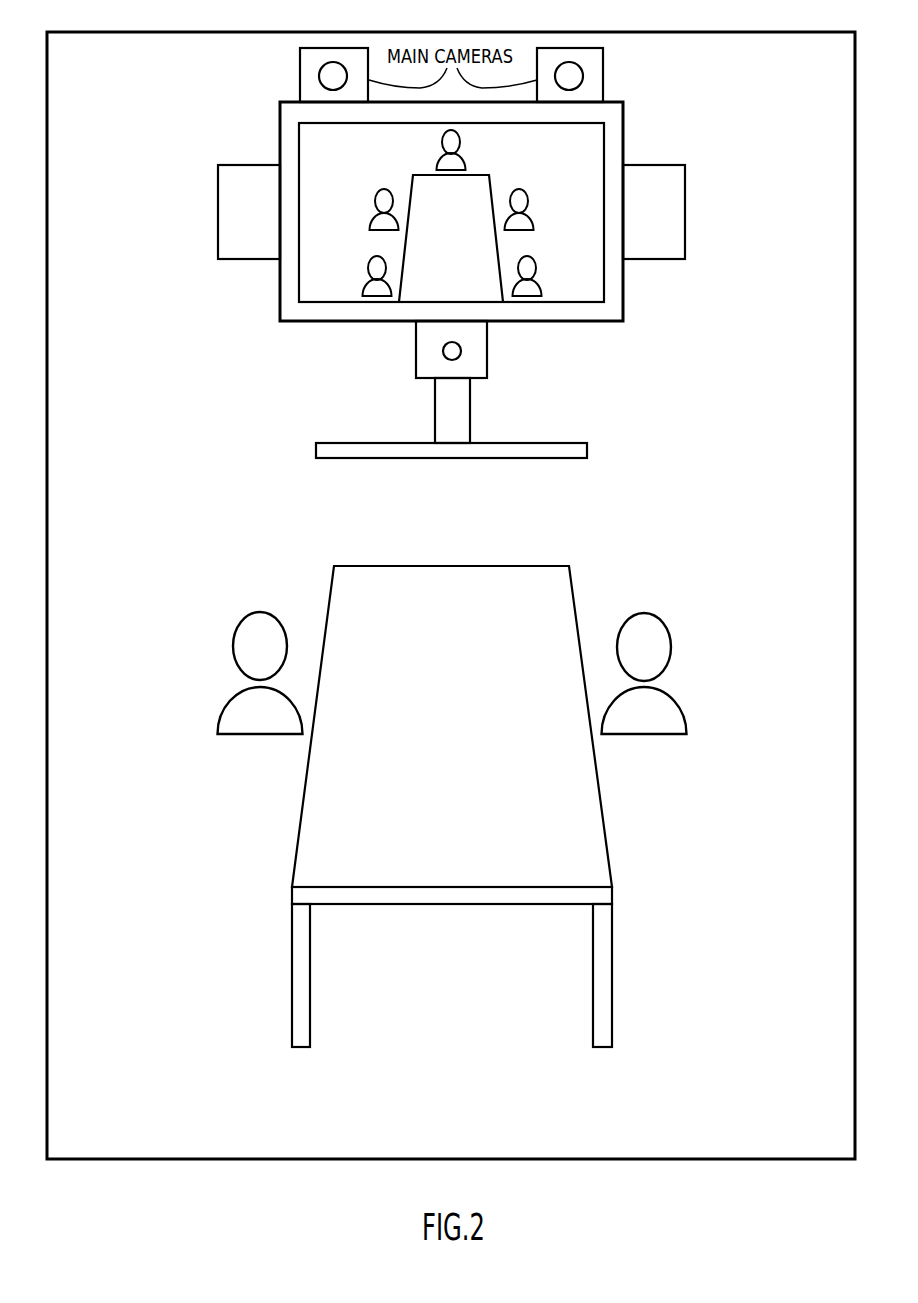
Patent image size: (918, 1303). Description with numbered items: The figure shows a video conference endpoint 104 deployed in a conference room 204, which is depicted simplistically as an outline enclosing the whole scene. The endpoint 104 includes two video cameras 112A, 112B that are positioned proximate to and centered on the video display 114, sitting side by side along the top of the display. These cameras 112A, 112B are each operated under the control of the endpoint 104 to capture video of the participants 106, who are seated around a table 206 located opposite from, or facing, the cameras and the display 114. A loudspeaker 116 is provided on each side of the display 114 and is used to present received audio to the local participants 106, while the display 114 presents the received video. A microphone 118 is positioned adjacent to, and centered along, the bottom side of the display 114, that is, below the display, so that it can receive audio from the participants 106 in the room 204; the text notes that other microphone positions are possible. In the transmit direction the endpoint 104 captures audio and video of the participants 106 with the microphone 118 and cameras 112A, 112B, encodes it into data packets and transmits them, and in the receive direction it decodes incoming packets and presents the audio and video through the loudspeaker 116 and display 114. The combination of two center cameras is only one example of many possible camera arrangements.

The video conference endpoint 104 is at (220, 111).
The participants 106 is at (258, 738).
The video camera 112A is at (300, 78).
The video camera 112B is at (603, 78).
The video display 114 is at (580, 158).
The loudspeaker 116 is at (218, 212).
The microphone 118 is at (487, 349).
The conference room 204 is at (764, 84).
The table 206 is at (464, 757).